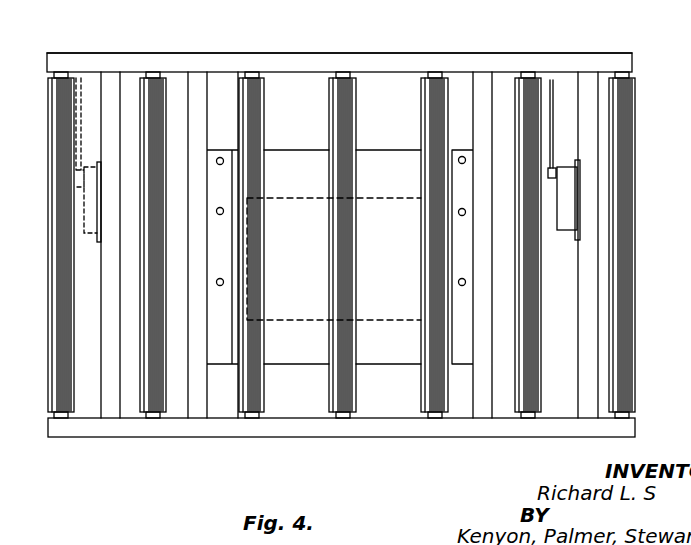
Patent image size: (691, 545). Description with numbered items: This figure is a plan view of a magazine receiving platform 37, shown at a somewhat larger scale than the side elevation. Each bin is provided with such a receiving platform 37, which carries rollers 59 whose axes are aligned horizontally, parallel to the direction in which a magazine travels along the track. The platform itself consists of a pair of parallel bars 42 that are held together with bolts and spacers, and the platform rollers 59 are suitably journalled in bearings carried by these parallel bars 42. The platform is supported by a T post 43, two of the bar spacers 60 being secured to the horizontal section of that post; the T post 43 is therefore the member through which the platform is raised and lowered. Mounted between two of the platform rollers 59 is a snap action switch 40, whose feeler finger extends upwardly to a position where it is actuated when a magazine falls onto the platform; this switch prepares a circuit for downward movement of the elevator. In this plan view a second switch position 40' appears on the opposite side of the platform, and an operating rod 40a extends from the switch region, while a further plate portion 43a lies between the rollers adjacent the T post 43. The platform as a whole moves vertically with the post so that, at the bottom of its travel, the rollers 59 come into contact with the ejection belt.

The receiving platform 37 is at (542, 52).
The snap action switch 40 is at (564, 213).
The bracket (hidden) 40' is at (57, 160).
The rod 40a is at (553, 92).
The parallel bars 42 is at (292, 62).
The T post 43 is at (372, 197).
The plate 43a is at (290, 145).
The platform rollers 59 is at (67, 73).
The bar spacers 60 is at (110, 80).